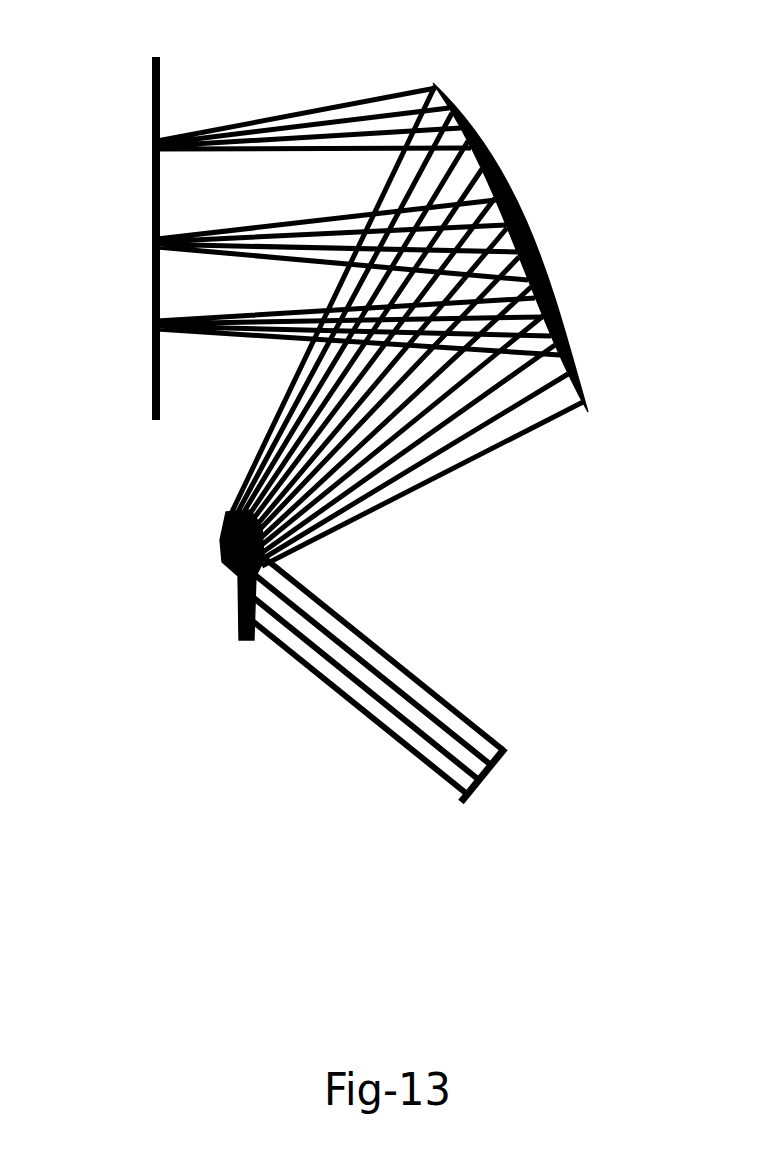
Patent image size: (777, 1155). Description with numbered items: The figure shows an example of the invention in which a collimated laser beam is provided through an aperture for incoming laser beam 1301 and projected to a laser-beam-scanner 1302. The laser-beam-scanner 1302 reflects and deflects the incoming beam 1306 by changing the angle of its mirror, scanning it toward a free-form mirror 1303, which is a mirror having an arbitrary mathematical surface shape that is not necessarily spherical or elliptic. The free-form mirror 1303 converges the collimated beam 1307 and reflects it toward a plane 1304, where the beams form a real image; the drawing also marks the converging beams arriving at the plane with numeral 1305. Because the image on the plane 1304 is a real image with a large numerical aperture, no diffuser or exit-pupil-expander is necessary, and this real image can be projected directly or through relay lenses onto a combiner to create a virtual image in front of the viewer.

The aperture for incoming laser beam 1301 is at (511, 742).
The laser-beam-scanner 1302 is at (234, 587).
The free-form mirror 1303 is at (541, 248).
The plane 1304 is at (164, 82).
The light beams converging on image plane 1305 is at (186, 250).
The incoming beam 1306 is at (397, 652).
The collimated beam 1307 is at (455, 466).